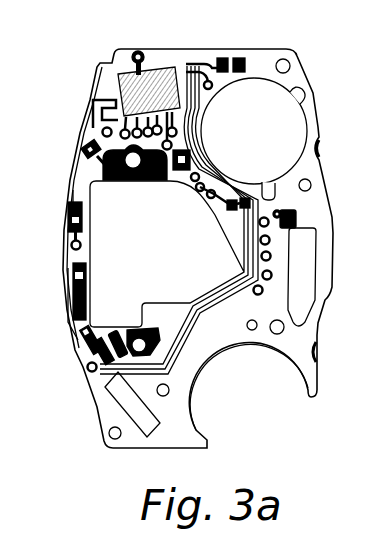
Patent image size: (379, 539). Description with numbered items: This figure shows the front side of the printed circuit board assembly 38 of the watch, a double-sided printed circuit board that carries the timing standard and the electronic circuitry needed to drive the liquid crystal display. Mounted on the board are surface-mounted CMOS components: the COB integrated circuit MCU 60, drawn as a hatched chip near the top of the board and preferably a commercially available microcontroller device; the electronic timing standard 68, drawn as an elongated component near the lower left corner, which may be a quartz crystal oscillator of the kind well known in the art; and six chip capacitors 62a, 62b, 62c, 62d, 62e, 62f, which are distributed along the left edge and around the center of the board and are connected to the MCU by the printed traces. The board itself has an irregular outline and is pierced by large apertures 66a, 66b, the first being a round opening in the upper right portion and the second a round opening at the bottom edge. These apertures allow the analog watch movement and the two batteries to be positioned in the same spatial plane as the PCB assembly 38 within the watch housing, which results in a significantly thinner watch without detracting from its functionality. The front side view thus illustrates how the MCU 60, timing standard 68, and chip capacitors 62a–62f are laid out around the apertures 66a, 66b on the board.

The PCB assembly 38 is at (306, 66).
The COB integrated circuit MCU 60 is at (152, 90).
The chip capacitor 62a is at (72, 152).
The chip capacitor 62b is at (177, 178).
The chip capacitor 62c is at (233, 206).
The chip capacitor 62d is at (70, 220).
The chip capacitor 62e is at (72, 277).
The chip capacitor 62f is at (83, 327).
The aperture 66a is at (277, 143).
The aperture 66b is at (195, 372).
The electronic timing standard 68 is at (130, 402).